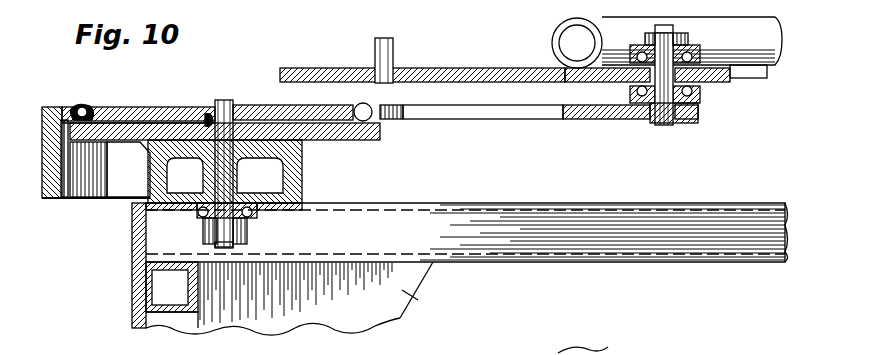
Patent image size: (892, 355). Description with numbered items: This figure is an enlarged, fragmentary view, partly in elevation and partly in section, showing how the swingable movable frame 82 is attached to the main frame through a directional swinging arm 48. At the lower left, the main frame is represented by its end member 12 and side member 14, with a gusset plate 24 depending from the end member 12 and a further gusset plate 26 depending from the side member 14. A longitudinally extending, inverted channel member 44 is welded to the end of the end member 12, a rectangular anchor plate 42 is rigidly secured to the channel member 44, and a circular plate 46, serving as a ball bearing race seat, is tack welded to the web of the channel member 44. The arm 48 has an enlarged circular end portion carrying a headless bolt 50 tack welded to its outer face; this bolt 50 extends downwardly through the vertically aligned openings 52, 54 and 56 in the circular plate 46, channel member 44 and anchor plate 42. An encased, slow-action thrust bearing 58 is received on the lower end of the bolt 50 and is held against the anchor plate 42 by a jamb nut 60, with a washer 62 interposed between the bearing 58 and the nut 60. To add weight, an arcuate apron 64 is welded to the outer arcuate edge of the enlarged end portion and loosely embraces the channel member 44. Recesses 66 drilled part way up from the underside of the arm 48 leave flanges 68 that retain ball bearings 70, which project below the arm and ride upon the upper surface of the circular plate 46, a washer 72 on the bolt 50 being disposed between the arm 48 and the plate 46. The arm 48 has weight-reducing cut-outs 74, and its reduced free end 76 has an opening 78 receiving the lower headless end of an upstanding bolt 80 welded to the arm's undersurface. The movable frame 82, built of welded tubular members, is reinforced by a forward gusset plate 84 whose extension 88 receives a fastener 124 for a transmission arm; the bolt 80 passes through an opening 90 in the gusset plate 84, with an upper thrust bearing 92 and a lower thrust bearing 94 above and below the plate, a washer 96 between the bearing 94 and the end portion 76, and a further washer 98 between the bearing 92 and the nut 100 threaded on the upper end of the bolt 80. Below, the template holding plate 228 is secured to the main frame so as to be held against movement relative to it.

The end member 12 is at (168, 314).
The side member 14 is at (553, 220).
The gusset plate 24 is at (137, 297).
The gusset plate 26 is at (425, 290).
The anchor plate 42 is at (268, 200).
The channel member 44 is at (300, 163).
The circular plate 46 is at (368, 133).
The swinging arm 48 is at (158, 113).
The headless bolt 50 is at (225, 107).
The opening 52 is at (208, 118).
The opening 54 is at (237, 152).
The opening 56 is at (205, 185).
The thrust bearing 58 is at (197, 218).
The jamb nut 60 is at (247, 233).
The washer 62 is at (203, 228).
The arcuate apron 64 is at (45, 187).
The recess 66 is at (72, 116).
The flange 68 is at (90, 112).
The ball bearing 70 is at (78, 110).
The washer 72 is at (247, 117).
The cut-out 74 is at (563, 110).
The free end 76 is at (685, 115).
The opening 78 is at (647, 115).
The upstanding bolt 80 is at (665, 123).
The movable frame 82 is at (727, 23).
The forward gusset plate 84 is at (722, 78).
The extension 88 is at (330, 72).
The opening 90 is at (693, 62).
The upper thrust bearing 92 is at (637, 50).
The lower thrust bearing 94 is at (632, 88).
The washer 96 is at (697, 100).
The washer 98 is at (690, 40).
The nut 100 is at (656, 25).
The fastener 124 is at (387, 56).
The template holding plate 228 is at (606, 345).